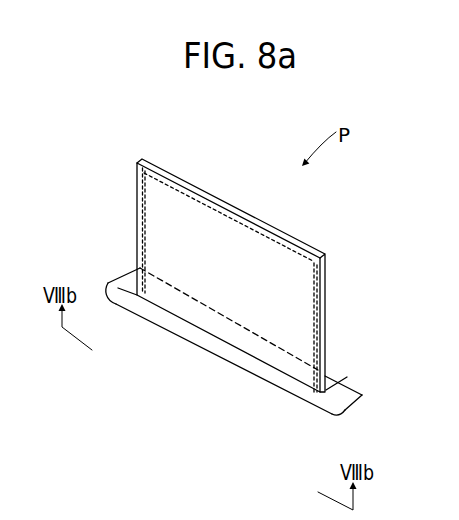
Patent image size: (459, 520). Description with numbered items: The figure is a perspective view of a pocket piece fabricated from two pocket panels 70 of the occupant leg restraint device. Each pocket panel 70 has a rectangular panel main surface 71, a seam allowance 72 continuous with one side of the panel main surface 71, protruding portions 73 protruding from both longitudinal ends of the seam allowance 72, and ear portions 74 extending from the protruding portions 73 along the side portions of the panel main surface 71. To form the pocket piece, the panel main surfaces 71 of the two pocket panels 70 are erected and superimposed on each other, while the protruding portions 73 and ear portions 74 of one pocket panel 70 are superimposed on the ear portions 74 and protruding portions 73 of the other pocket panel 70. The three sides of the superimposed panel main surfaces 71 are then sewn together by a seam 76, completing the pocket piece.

The pocket panel 70 is at (322, 242).
The panel main surface 71 is at (147, 168).
The seam allowance 72 is at (205, 340).
The protruding portion 73 is at (120, 288).
The ear portion 74 is at (350, 389).
The seam 76 is at (141, 206).